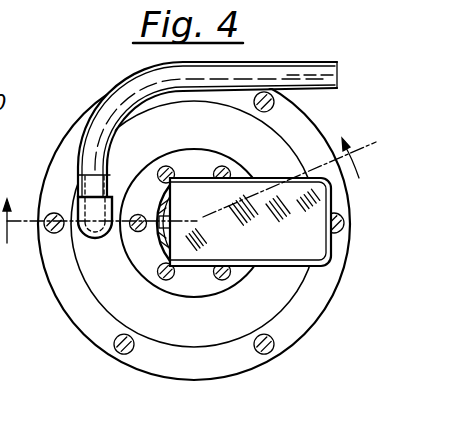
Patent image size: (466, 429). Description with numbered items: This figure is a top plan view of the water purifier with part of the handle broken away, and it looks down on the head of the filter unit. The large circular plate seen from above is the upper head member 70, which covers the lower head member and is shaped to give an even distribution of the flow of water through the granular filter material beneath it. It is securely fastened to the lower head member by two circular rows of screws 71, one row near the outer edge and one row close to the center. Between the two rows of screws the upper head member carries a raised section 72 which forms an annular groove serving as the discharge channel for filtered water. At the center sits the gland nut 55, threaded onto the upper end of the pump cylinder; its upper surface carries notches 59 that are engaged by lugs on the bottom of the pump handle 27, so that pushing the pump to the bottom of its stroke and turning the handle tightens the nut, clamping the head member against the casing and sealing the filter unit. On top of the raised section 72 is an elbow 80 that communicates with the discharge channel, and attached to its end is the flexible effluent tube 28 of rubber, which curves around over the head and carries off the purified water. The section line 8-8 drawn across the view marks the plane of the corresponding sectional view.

The section line 8- 8 is at (189, 194).
The pump handle 27 is at (266, 256).
The effluent tube 28 is at (307, 90).
The gland nut 55 is at (168, 203).
The notches 59 is at (161, 238).
The upper head member 70 is at (292, 339).
The screws 71 is at (216, 271).
The raised section 72 is at (98, 285).
The elbow 80 is at (91, 239).